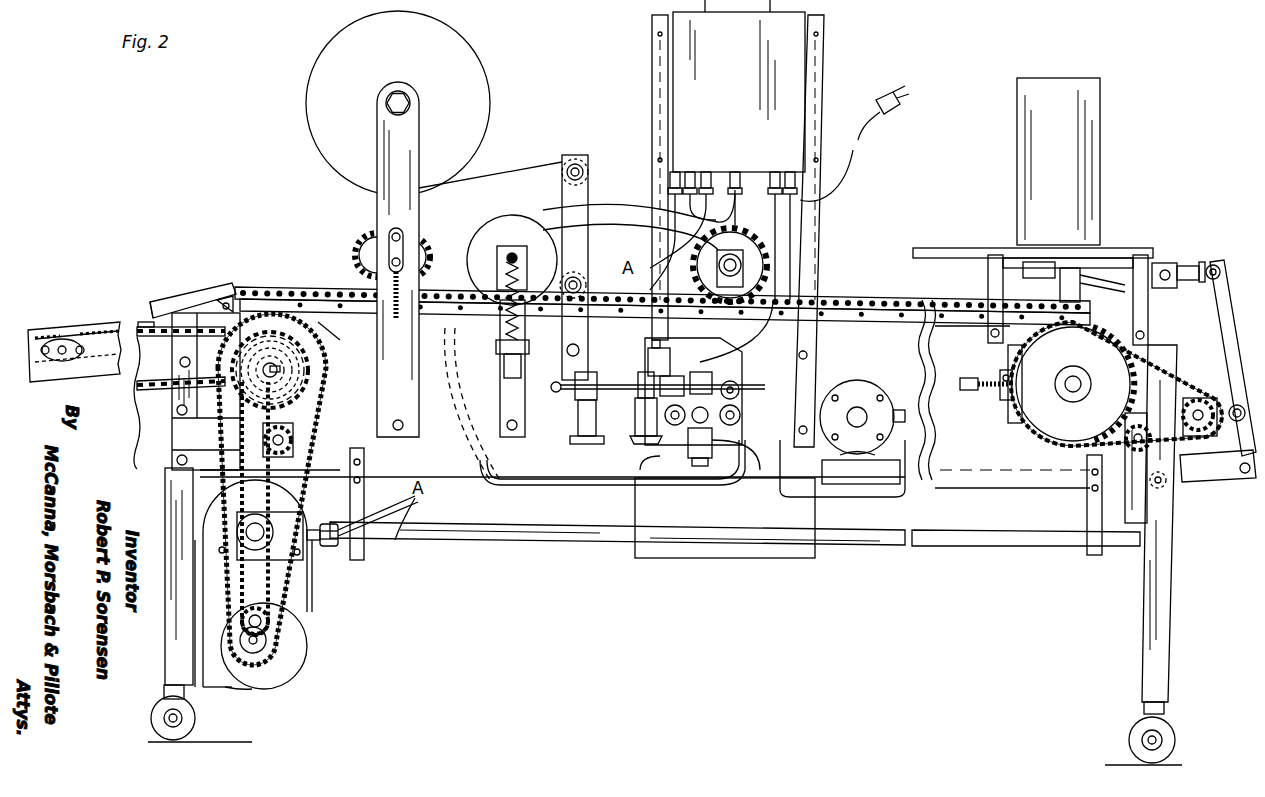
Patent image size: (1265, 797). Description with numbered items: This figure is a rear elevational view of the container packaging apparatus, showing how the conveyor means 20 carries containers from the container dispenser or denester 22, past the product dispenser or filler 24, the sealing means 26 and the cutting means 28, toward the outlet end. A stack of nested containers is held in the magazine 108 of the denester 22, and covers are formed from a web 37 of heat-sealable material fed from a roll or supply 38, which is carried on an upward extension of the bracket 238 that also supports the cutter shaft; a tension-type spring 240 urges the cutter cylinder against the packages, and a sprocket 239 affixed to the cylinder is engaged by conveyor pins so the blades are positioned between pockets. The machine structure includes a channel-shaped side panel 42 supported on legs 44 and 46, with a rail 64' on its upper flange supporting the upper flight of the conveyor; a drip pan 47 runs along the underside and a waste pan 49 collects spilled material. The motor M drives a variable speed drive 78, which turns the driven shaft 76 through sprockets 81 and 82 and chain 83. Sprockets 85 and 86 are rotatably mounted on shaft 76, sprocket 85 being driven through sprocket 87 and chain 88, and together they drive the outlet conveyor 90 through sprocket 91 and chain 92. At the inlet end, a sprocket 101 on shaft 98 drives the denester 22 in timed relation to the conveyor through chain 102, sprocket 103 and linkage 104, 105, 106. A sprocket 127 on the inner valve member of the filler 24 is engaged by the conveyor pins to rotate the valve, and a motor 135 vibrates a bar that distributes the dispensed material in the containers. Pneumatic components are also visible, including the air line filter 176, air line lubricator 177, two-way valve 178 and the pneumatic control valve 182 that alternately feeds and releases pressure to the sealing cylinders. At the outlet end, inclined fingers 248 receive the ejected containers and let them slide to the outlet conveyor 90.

The conveyor means 20 is at (268, 285).
The container dispenser or denester 22 is at (1104, 184).
The product dispenser or filler 24 is at (768, 246).
The sealing means 26 is at (513, 214).
The cutting means 28 is at (354, 248).
The web 37 is at (560, 165).
The roll or supply 38 is at (307, 110).
The side panel 42 is at (447, 462).
The leg 44 is at (172, 472).
The leg 46 is at (1146, 613).
The drip pan 47 is at (512, 542).
The waste pan 49 is at (740, 556).
The rail 64' is at (342, 338).
The driven shaft 76 is at (264, 376).
The variable speed drive 78 is at (292, 655).
The sprocket 81 is at (278, 666).
The sprocket 82 is at (308, 389).
The chain 83 is at (306, 444).
The sprocket 85 is at (300, 372).
The sprocket 86 is at (305, 338).
The sprocket 87 is at (258, 610).
The chain 88 is at (282, 640).
The outlet conveyor 90 is at (86, 324).
The sprocket 91 is at (56, 330).
The chain 92 is at (104, 326).
The shaft 98 is at (1076, 383).
The sprocket 101 is at (1014, 366).
The chain 102 is at (1016, 396).
The sprocket 103 is at (1200, 400).
The linkage 104 is at (1222, 400).
The linkage 105 is at (1222, 310).
The linkage 106 is at (1190, 264).
The magazine 108 is at (1092, 130).
The sprocket 127 is at (768, 268).
The motor 135 is at (858, 388).
The air line filter 176 is at (590, 375).
The air line lubricator 177 is at (634, 428).
The two-way valve 178 is at (662, 370).
The pneumatic control valve 182 is at (706, 462).
The bracket 238 is at (375, 197).
The sprocket 239 is at (430, 250).
The tension-type spring 240 is at (396, 374).
The fingers 248 is at (188, 300).
The motor M is at (300, 572).